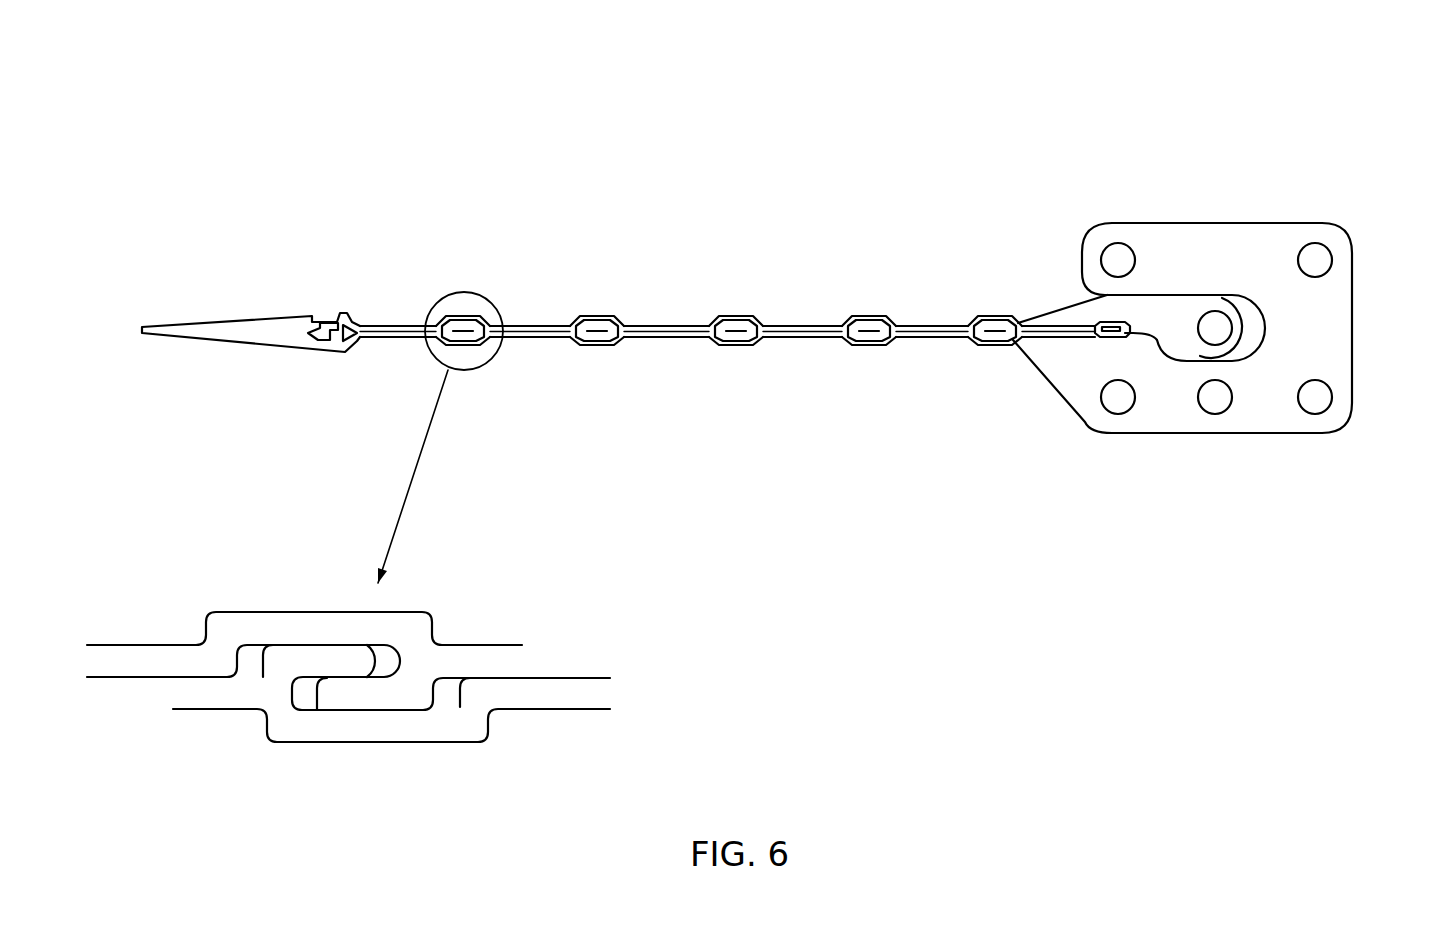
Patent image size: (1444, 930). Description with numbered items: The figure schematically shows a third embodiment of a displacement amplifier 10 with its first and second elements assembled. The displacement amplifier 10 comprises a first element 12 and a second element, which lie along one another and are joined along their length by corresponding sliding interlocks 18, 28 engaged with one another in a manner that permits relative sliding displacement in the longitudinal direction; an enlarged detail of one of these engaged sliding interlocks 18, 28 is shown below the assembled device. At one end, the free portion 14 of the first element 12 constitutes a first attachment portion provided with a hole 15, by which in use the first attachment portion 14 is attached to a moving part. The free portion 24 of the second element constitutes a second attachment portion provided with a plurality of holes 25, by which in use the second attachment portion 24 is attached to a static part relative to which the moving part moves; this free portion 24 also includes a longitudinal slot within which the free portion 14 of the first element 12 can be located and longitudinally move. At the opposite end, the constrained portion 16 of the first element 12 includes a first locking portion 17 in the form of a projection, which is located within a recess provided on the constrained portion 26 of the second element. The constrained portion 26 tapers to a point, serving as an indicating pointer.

The displacement amplifier 10 is at (1187, 92).
The first element 12 is at (135, 643).
The free portion of the first element 14 is at (1232, 352).
The hole 15 is at (1207, 328).
The constrained portion of the first element 16 is at (327, 314).
The first locking portion 17 is at (908, 324).
The sliding interlock 18 is at (388, 626).
The free portion of the second element 24 is at (1245, 248).
The holes 25 is at (1315, 397).
The constrained portion of the second element 26 is at (332, 332).
The sliding interlock 28 is at (372, 733).